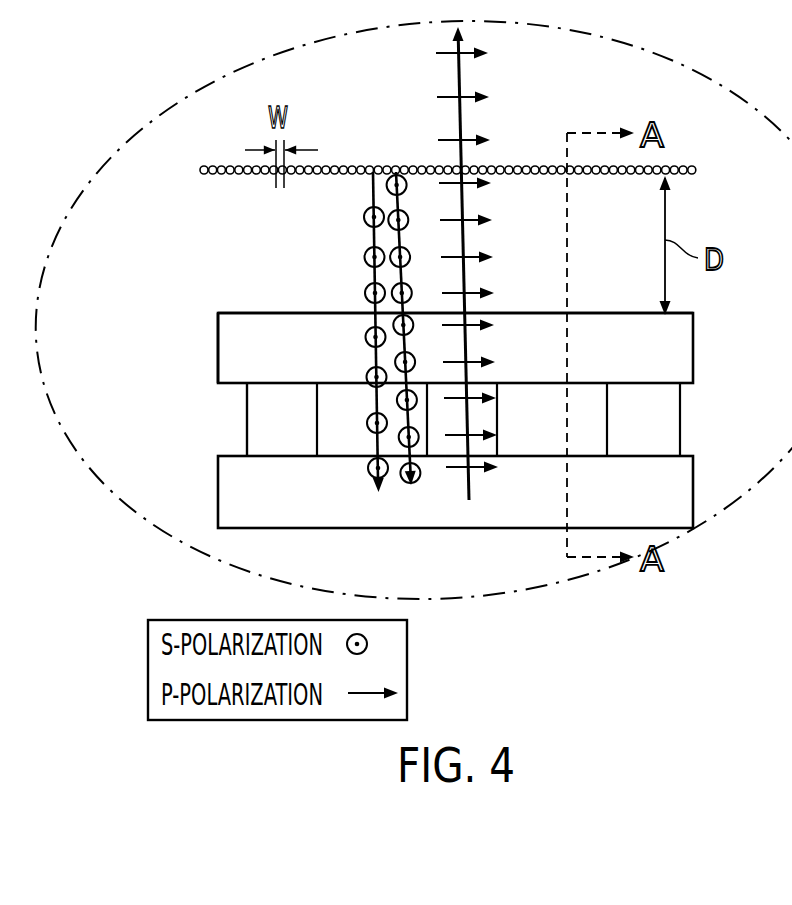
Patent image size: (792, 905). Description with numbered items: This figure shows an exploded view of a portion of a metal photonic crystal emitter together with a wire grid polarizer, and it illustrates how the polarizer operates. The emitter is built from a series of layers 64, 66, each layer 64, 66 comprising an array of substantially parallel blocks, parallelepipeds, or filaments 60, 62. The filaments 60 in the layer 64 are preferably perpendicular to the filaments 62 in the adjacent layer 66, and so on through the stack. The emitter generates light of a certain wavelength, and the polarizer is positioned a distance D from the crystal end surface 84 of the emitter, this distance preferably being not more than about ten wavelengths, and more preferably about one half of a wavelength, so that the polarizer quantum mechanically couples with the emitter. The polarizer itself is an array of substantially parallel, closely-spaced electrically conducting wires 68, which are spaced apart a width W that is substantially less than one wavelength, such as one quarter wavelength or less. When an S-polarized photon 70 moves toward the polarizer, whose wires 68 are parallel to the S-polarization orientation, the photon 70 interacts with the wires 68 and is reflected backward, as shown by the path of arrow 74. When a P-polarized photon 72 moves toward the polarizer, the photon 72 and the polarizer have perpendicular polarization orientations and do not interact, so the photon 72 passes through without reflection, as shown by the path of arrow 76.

The filaments 60 is at (695, 352).
The filaments 62 is at (681, 428).
The layer 64 is at (188, 338).
The layer 66 is at (202, 420).
The electrically conducting wires 68 is at (694, 172).
The S-polarized photon 70 is at (362, 262).
The P-polarized photon 72 is at (474, 258).
The arrow 74 is at (372, 486).
The arrow 76 is at (471, 484).
The crystal end surface 84 is at (247, 300).